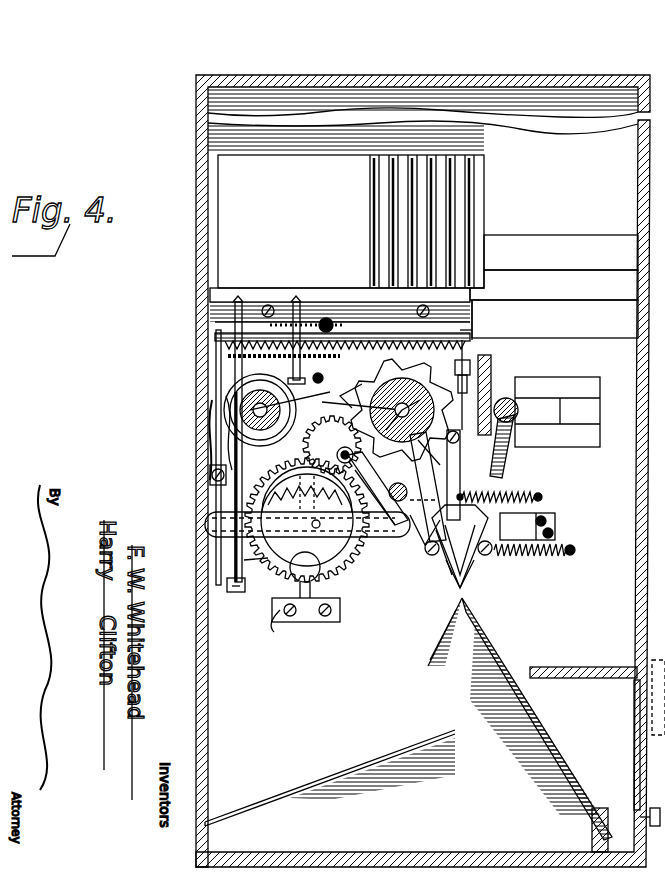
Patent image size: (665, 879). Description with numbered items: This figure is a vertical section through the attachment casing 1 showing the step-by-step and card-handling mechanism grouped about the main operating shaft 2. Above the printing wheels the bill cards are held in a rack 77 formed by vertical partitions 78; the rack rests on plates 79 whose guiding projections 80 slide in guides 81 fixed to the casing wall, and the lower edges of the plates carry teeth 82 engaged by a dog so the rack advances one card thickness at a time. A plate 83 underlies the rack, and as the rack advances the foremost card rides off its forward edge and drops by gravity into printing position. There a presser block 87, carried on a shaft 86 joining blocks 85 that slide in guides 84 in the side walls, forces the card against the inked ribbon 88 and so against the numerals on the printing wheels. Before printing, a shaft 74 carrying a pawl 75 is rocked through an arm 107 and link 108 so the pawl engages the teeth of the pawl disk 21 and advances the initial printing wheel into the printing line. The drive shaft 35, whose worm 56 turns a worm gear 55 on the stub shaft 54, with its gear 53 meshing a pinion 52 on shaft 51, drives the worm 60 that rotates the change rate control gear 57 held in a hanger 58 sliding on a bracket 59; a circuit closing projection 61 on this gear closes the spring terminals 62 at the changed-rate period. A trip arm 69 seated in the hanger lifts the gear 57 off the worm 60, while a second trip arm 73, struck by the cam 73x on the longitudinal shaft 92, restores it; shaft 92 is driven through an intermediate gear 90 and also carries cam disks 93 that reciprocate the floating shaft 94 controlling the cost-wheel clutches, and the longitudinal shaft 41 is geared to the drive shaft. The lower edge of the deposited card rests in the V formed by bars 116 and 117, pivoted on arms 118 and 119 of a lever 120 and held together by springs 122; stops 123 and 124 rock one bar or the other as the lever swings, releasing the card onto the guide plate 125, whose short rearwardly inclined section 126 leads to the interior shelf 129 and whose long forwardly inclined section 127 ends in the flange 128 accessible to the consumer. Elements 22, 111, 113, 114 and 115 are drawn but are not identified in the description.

The casing 1 is at (196, 262).
The main operating shaft 2 is at (362, 400).
The pawl disk 21 is at (351, 387).
The rod 22 is at (453, 385).
The drive shaft 35 is at (332, 320).
The shaft 41 is at (324, 380).
The shaft 51 is at (242, 300).
The pinion 52 is at (235, 352).
The gear 53 is at (340, 380).
The stub shaft 54 is at (330, 322).
The worm gear 55 is at (296, 300).
The worm 56 is at (340, 324).
The change rate control gear 57 is at (292, 572).
The hanger 58 is at (310, 536).
The bracket 59 is at (230, 578).
The worm 60 is at (280, 562).
The circuit closing projection 61 is at (306, 519).
The spring terminals 62 is at (300, 624).
The trip arm 69 is at (205, 518).
The trip arm 73 is at (214, 430).
The cam 73x is at (262, 392).
The shaft 74 is at (375, 497).
The pawl 75 is at (378, 488).
The rack 77 is at (445, 158).
The vertical partitions 78 is at (366, 214).
The plates 79 is at (472, 329).
The guiding projections 80 is at (500, 292).
The guides 81 is at (555, 286).
The teeth 82 is at (408, 365).
The plate 83 is at (466, 310).
The guides 84 is at (568, 377).
The blocks 85 is at (569, 411).
The shaft 86 is at (518, 410).
The presser block 87 is at (491, 372).
The inked ribbon 88 is at (492, 446).
The intermediate gear 90 is at (303, 452).
The shaft 92 is at (290, 397).
The cam disk 93 is at (196, 395).
The floating shaft 94 is at (260, 414).
The arm 107 is at (415, 512).
The link 108 is at (354, 488).
The arm 111 is at (460, 478).
The link 113 is at (430, 525).
The arm 114 is at (428, 487).
The rack 115 is at (408, 345).
The bar 116 is at (472, 572).
The bar 117 is at (448, 576).
The arm 118 is at (462, 540).
The arm 119 is at (440, 560).
The lever 120 is at (458, 450).
The springs 122 is at (500, 565).
The stop 123 is at (556, 527).
The stop 124 is at (386, 538).
The guide plate 125 is at (470, 600).
The rearwardly inclined section 126 is at (452, 610).
The forwardly inclined section 127 is at (500, 650).
The flange 128 is at (597, 756).
The shelf 129 is at (348, 765).